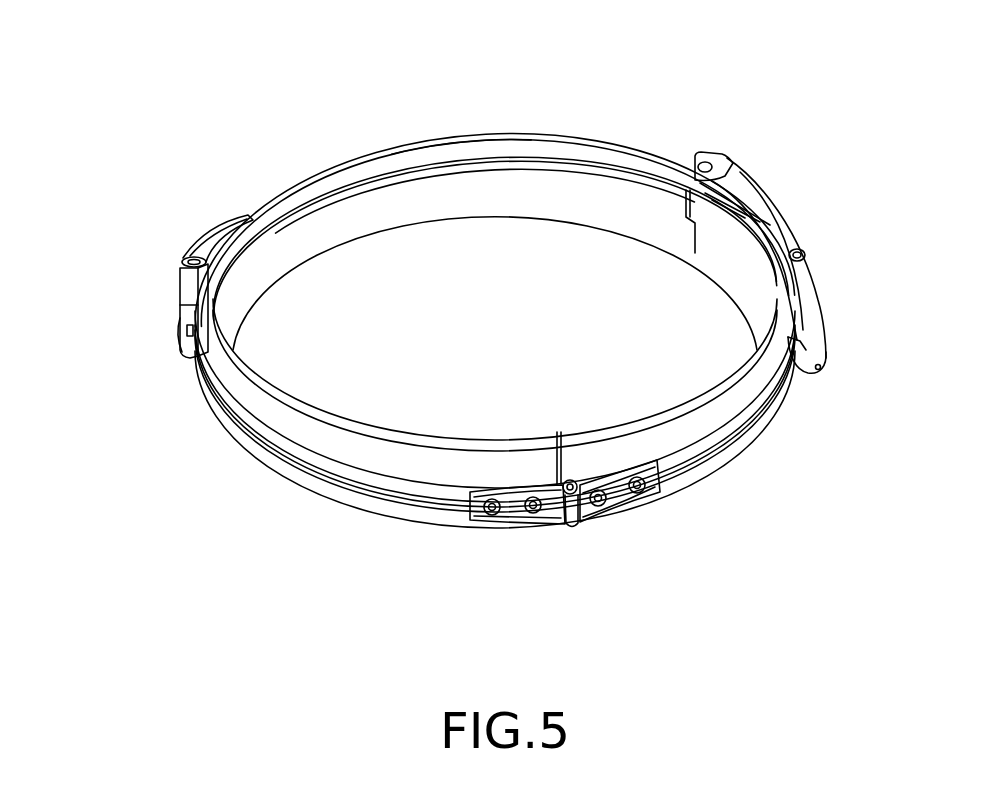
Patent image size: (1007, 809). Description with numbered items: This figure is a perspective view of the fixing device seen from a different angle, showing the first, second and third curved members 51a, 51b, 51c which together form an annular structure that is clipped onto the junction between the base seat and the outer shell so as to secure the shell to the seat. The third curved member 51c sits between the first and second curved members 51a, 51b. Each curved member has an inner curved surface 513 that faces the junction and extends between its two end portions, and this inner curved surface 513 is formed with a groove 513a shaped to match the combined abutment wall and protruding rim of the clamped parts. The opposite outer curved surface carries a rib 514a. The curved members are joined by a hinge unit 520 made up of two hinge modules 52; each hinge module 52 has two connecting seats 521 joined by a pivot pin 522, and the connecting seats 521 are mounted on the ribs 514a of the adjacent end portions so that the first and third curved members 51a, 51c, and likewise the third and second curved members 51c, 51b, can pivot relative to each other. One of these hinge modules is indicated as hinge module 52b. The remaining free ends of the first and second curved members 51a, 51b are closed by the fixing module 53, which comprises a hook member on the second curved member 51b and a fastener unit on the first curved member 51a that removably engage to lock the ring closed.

The first curved member 51a is at (712, 386).
The second curved member 51b is at (381, 151).
The third curved member 51c is at (291, 394).
The inner curved surface 513 is at (537, 188).
The groove 513a is at (439, 178).
The rib 514a is at (438, 492).
The hinge module 52 is at (576, 503).
The hinge connector (left) 52b is at (147, 262).
The hinge unit 520 is at (170, 351).
The connecting seat 521 is at (527, 527).
The pivot pin 522 is at (568, 481).
The fixing module 53 is at (804, 196).